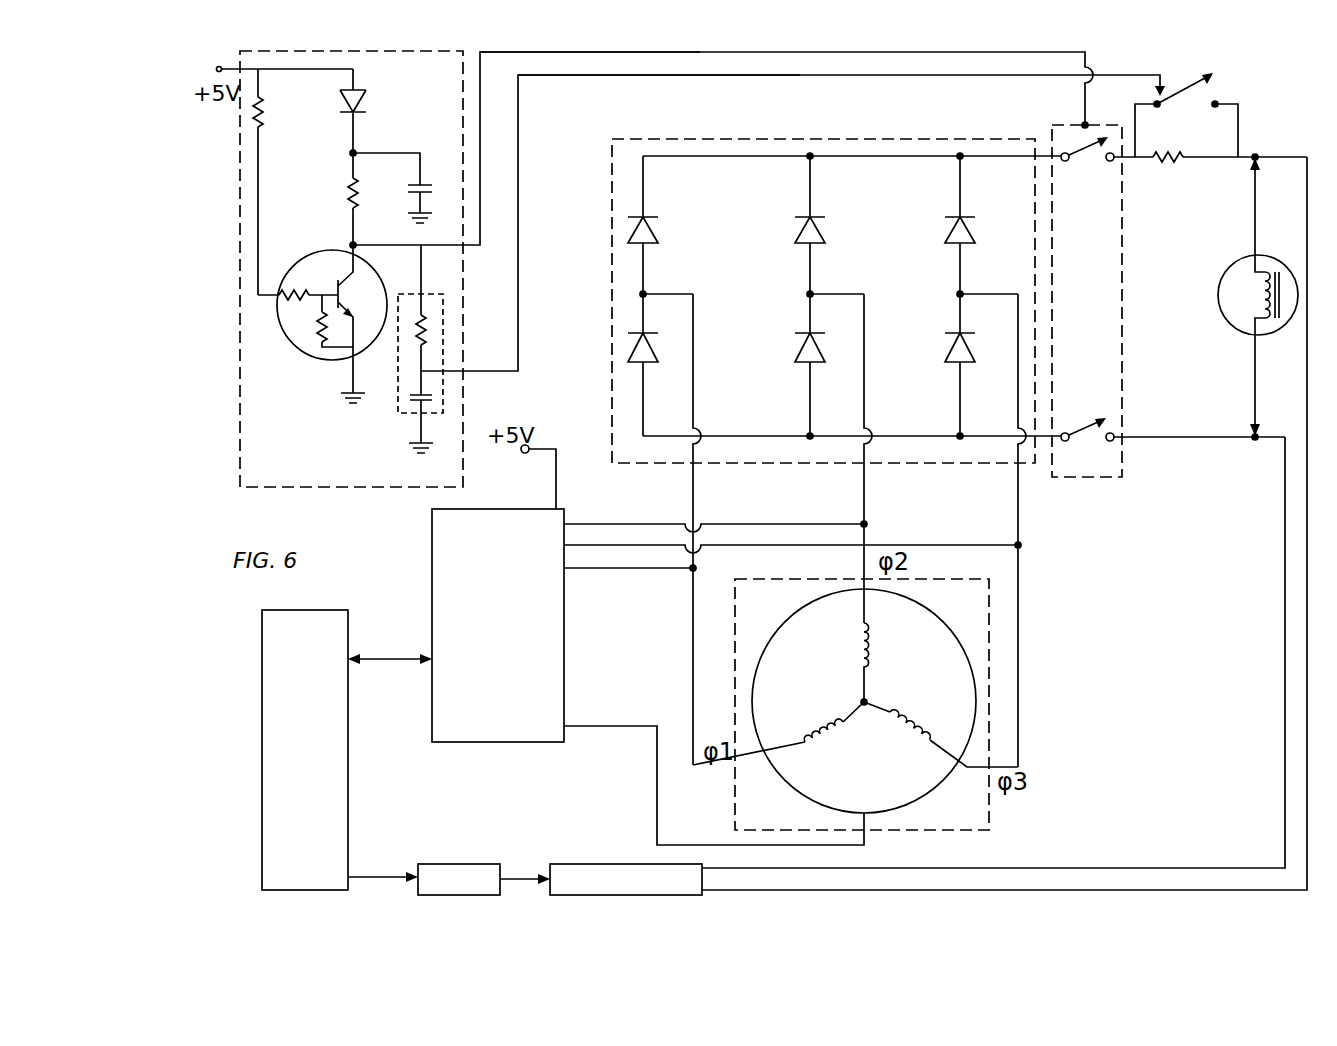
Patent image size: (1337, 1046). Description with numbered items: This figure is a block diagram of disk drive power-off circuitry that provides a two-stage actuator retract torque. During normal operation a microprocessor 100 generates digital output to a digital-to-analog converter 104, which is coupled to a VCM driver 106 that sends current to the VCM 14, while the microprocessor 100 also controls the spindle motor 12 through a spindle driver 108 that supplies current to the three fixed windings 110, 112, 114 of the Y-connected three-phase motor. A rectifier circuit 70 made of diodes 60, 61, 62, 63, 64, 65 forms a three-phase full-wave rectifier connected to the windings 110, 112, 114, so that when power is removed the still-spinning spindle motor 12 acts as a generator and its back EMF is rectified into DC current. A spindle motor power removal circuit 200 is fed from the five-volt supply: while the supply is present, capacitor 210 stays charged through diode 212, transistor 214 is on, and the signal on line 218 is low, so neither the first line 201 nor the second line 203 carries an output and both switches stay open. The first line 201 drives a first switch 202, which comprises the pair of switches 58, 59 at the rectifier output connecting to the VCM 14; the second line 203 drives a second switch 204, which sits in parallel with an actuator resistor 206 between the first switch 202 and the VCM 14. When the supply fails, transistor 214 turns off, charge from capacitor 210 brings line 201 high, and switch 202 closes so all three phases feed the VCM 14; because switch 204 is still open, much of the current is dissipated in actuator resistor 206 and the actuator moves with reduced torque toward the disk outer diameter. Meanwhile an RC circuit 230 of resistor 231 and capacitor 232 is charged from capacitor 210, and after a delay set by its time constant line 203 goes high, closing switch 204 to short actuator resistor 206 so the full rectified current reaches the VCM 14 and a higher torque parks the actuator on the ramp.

The spindle motor 12 is at (963, 830).
The VCM 14 is at (1217, 288).
The switch 58 is at (1107, 164).
The switch 59 is at (1173, 417).
The diode 60 is at (657, 236).
The diode 61 is at (822, 236).
The diode 62 is at (972, 236).
The diode 63 is at (650, 363).
The diode 64 is at (802, 363).
The diode 65 is at (952, 363).
The rectifier circuit 70 is at (608, 207).
The microprocessor 100 is at (262, 676).
The digital-to-analog converter 104 is at (432, 864).
The VCM driver 106 is at (567, 864).
The spindle driver 108 is at (432, 720).
The winding 110 is at (842, 725).
The winding 112 is at (868, 647).
The winding 114 is at (913, 712).
The spindle motor power removal circuit 200 is at (378, 487).
The first line 201 is at (603, 52).
The first switch 202 is at (1083, 477).
The second line 203 is at (708, 77).
The second switch 204 is at (1187, 91).
The actuator resistor 206 is at (1162, 165).
The capacitor 210 is at (427, 182).
The diode 212 is at (362, 93).
The transistor 214 is at (302, 358).
The line 218 is at (383, 245).
The RC circuit 230 is at (402, 413).
The resistor 231 is at (413, 330).
The capacitor 232 is at (425, 393).